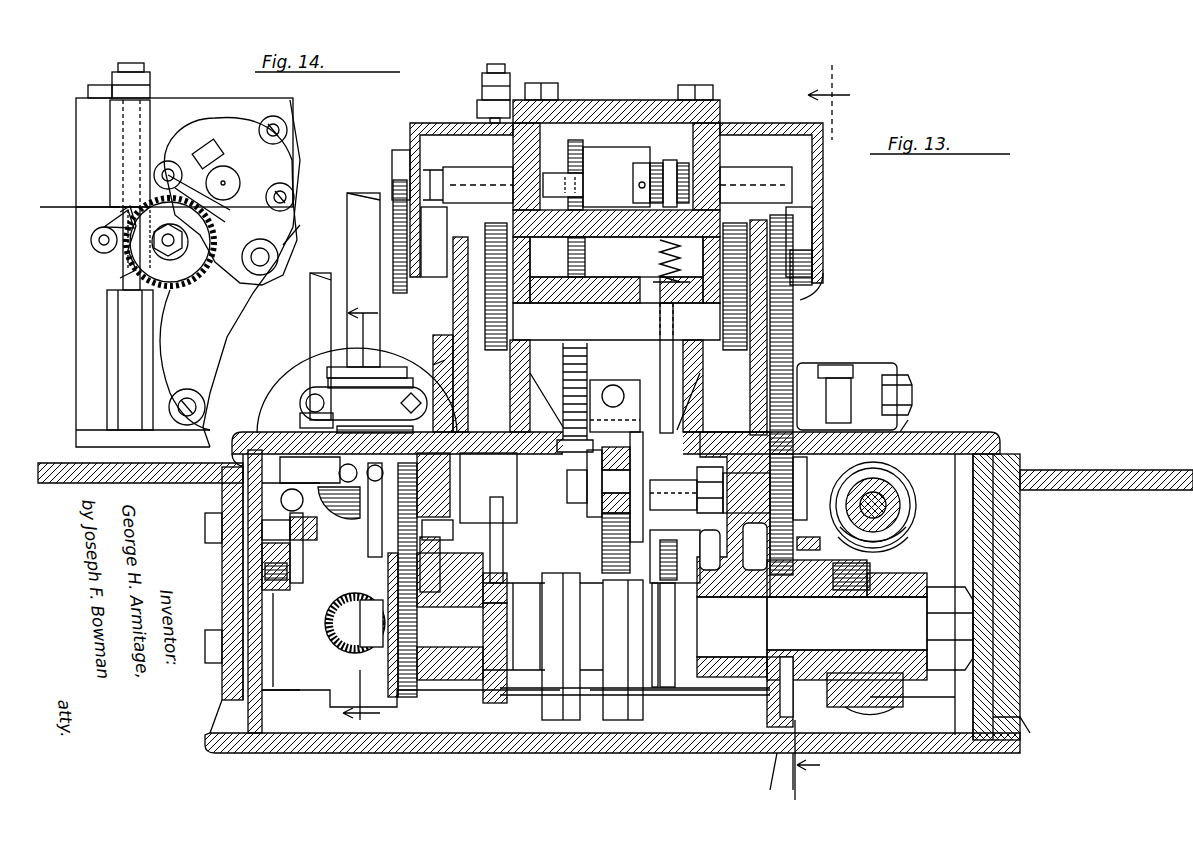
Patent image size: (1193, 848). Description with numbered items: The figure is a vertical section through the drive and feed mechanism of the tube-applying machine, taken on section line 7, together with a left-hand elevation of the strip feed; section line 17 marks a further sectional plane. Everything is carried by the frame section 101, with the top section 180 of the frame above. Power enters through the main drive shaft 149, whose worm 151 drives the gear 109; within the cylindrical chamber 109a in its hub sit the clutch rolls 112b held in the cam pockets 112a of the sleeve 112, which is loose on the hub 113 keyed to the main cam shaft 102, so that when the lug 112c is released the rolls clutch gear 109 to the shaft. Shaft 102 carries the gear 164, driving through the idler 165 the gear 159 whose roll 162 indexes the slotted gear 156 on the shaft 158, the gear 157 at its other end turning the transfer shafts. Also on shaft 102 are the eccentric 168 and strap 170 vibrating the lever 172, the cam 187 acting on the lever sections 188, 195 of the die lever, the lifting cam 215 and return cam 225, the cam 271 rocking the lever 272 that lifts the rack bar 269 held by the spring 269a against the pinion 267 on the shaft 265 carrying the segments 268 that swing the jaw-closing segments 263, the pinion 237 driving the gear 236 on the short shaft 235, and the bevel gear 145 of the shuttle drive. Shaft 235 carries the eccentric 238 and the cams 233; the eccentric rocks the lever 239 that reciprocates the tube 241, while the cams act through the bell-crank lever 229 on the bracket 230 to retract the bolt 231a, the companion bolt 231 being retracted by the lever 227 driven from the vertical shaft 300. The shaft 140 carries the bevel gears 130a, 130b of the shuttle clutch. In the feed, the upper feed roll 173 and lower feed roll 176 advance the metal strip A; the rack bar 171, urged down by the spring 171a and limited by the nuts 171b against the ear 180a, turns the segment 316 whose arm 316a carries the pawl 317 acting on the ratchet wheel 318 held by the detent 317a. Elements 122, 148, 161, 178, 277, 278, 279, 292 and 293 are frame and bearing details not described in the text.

In FIG. 13, the section line of Figure 7 is at (820, 446).
In FIG. 13, the section line of Figure 17 is at (361, 511).
In FIG. 14, the frame section 101 is at (76, 327).
In FIG. 13, the frame section 101 is at (965, 432).
In FIG. 13, the main cam shaft 102 is at (624, 616).
In FIG. 13, the gear 109 is at (870, 719).
In FIG. 13, the cylindrical chamber 109a is at (895, 545).
In FIG. 13, the sleeve 112 is at (847, 633).
In FIG. 13, the cam pockets 112a is at (800, 597).
In FIG. 13, the clutch rolls 112b is at (850, 590).
In FIG. 13, the radially projecting lug 112c is at (973, 615).
In FIG. 13, the hub of gear 164 113 is at (793, 700).
In FIG. 13, the lid joint 122 is at (916, 424).
In FIG. 13, the bevel gear 130a is at (422, 463).
In FIG. 13, the bevel gear 130b is at (368, 540).
In FIG. 13, the shaft 140 is at (380, 327).
In FIG. 13, the bevel gear 145 is at (395, 705).
In FIG. 13, the gear 148 is at (360, 653).
In FIG. 13, the main drive shaft 149 is at (900, 495).
In FIG. 13, the worm 151 is at (905, 480).
In FIG. 13, the gear 156 is at (752, 220).
In FIG. 13, the gear 157 is at (490, 228).
In FIG. 13, the shaft 158 is at (616, 368).
In FIG. 13, the gear 159 is at (847, 396).
In FIG. 13, the nut 161 is at (895, 375).
In FIG. 13, the roll 162 is at (835, 365).
In FIG. 13, the gear 164 is at (777, 753).
In FIG. 13, the idler 165 is at (800, 480).
In FIG. 13, the eccentric 168 is at (490, 703).
In FIG. 13, the strap 170 is at (497, 528).
In FIG. 14, the rack bar 171 is at (123, 170).
In FIG. 13, the rack bar 171 is at (500, 66).
In FIG. 14, the spring 171a is at (150, 78).
In FIG. 13, the nuts 171b is at (482, 80).
In FIG. 13, the lever 172 is at (570, 505).
In FIG. 13, the upper feed roll 173 is at (625, 140).
In FIG. 13, the lower feed roll 176 is at (616, 257).
In FIG. 13, the gear 178 is at (580, 140).
In FIG. 14, the top section of frame 180 is at (76, 132).
In FIG. 13, the top section of frame 180 is at (545, 83).
In FIG. 13, the ear 180a is at (477, 105).
In FIG. 13, the cam 187 is at (618, 720).
In FIG. 13, the lever section 188 is at (602, 527).
In FIG. 13, the lever section 195 is at (615, 396).
In FIG. 13, the lifting cam 215 is at (555, 720).
In FIG. 13, the return cam 225 is at (575, 720).
In FIG. 13, the lever 227 is at (300, 420).
In FIG. 13, the bell-crank lever 229 is at (357, 390).
In FIG. 13, the bracket 230 is at (300, 457).
In FIG. 13, the spring pressed bolt 231 is at (348, 463).
In FIG. 13, the spring pressed bolt 231a is at (375, 465).
In FIG. 13, the cams 233 is at (340, 525).
In FIG. 13, the short shaft 235 is at (205, 522).
In FIG. 13, the gear 236 is at (439, 530).
In FIG. 13, the pinion 237 is at (424, 580).
In FIG. 13, the eccentric 238 is at (262, 565).
In FIG. 13, the lever 239 is at (290, 530).
In FIG. 13, the tube 241 is at (262, 500).
In FIG. 14, the jaw-closing segments 263 is at (300, 230).
In FIG. 13, the jaw-closing segments 263 is at (812, 220).
In FIG. 14, the shaft 265 is at (226, 183).
In FIG. 13, the shaft 265 is at (581, 185).
In FIG. 13, the pinion 267 is at (636, 177).
In FIG. 13, the segments 268 is at (448, 175).
In FIG. 13, the rack bar 269 is at (660, 160).
In FIG. 13, the spring 269a is at (660, 300).
In FIG. 13, the cam 271 is at (668, 700).
In FIG. 13, the lever 272 is at (735, 575).
In FIG. 13, the flange 277 is at (1020, 505).
In FIG. 13, the flange 278 is at (180, 480).
In FIG. 13, the foot 279 is at (1008, 712).
In FIG. 13, the rim 292 is at (818, 290).
In FIG. 13, the wall 293 is at (434, 362).
In FIG. 13, the vertical shaft 300 is at (310, 309).
In FIG. 14, the segment 316 is at (180, 258).
In FIG. 14, the arm 316a is at (125, 268).
In FIG. 14, the pawl 317 is at (91, 240).
In FIG. 14, the spring pressed detent 317a is at (182, 160).
In FIG. 14, the ratchet wheel 318 is at (218, 225).
In FIG. 13, the ratchet wheel 318 is at (602, 247).
In FIG. 14, the metal strip A is at (52, 207).
In FIG. 13, the metal strip A is at (657, 261).